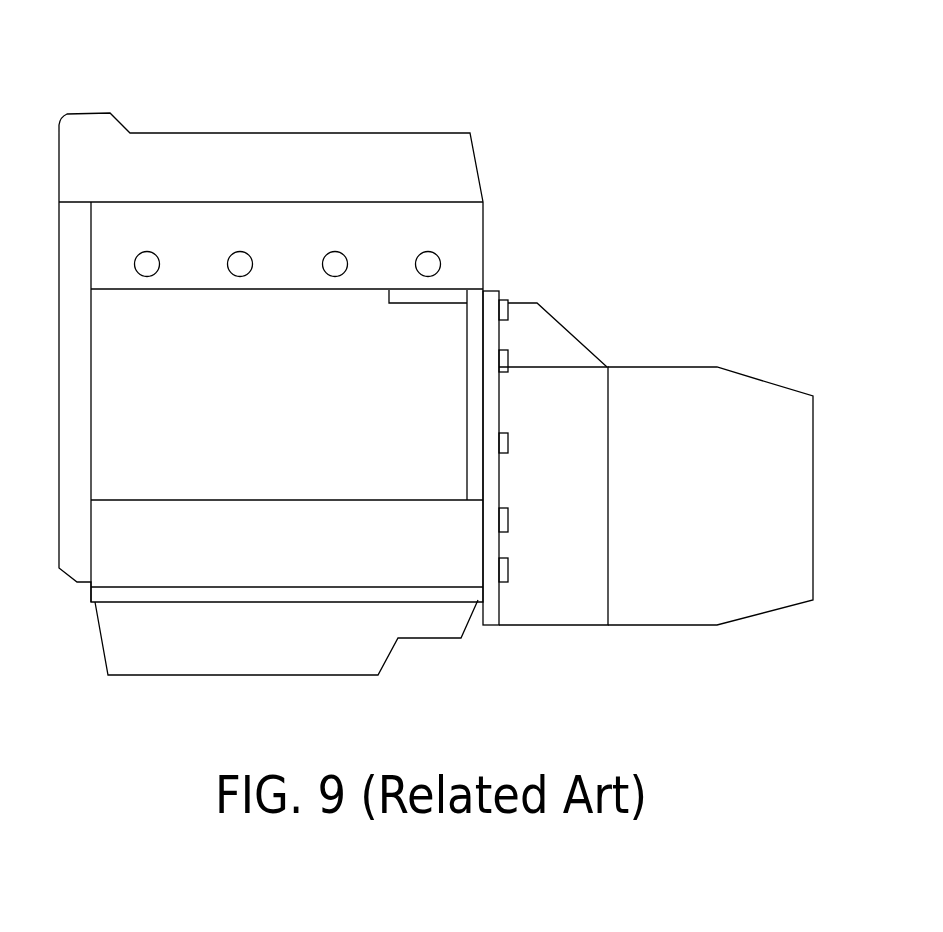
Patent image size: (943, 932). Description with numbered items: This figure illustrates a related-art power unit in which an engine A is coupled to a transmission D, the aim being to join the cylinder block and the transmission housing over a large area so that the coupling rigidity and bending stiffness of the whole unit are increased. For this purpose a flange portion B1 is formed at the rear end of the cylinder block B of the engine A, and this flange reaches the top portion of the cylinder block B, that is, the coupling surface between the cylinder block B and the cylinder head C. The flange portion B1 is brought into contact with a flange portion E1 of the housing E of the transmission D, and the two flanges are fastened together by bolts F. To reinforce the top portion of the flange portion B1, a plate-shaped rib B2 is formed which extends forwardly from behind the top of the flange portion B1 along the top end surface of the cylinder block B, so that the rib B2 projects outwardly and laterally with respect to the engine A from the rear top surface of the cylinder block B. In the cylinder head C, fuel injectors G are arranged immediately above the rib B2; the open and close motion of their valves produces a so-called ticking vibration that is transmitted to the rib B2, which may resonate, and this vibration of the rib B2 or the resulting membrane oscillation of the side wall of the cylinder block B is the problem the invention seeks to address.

The engine A is at (415, 116).
The cylinder block B is at (407, 473).
The flange portion B1 is at (467, 368).
The plate-shaped rib B2 is at (407, 305).
The cylinder head C is at (284, 222).
The transmission D is at (755, 358).
The housing E is at (587, 375).
The flange portion E1 is at (499, 400).
The bolts F is at (508, 360).
The fuel injectors G is at (443, 262).